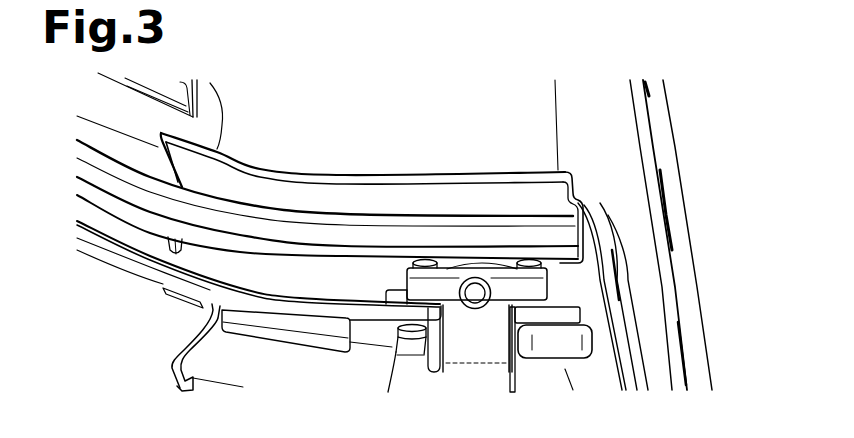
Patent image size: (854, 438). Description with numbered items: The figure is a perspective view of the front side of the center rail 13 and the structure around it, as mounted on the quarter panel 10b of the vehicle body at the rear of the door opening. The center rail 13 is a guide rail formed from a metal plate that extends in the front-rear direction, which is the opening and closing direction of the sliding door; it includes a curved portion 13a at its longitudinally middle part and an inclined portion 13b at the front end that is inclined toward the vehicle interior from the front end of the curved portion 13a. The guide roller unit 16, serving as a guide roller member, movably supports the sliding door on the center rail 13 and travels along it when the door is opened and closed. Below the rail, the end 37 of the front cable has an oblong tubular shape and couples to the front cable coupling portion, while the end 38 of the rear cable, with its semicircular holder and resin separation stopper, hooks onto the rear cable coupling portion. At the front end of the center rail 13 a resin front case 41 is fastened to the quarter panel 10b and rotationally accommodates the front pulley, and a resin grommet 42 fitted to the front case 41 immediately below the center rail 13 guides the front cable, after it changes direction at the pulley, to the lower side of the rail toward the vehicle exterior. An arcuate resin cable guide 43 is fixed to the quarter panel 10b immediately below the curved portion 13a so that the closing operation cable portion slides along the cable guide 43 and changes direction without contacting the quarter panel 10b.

The quarter panel 10b is at (153, 389).
The center rail 13 is at (438, 237).
The curved portion 13a is at (267, 220).
The inclined portion 13b is at (388, 233).
The guide roller unit 16 is at (392, 375).
The end of the front cable 37 is at (410, 354).
The end of the rear cable 38 is at (400, 293).
The front case 41 is at (558, 354).
The grommet 42 is at (512, 352).
The cable guide 43 is at (310, 342).